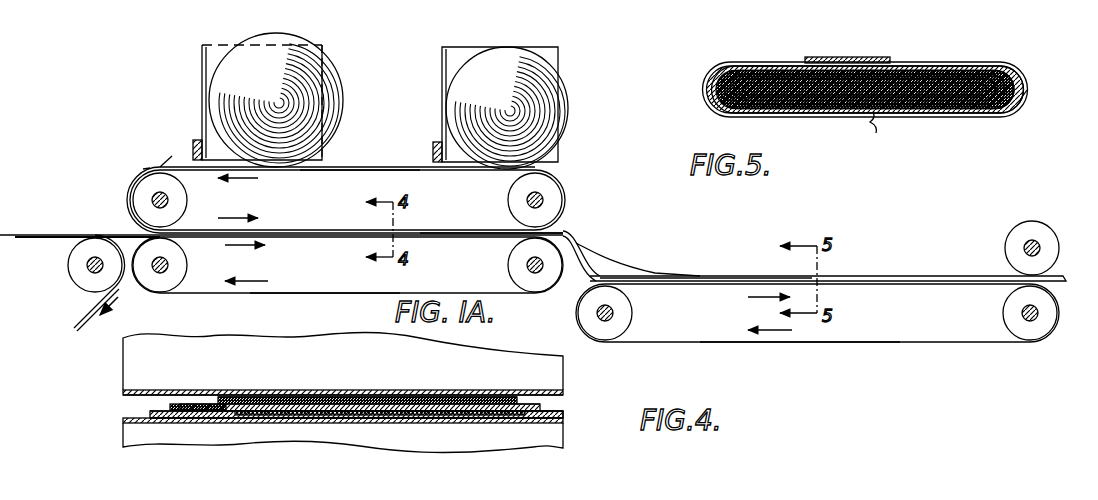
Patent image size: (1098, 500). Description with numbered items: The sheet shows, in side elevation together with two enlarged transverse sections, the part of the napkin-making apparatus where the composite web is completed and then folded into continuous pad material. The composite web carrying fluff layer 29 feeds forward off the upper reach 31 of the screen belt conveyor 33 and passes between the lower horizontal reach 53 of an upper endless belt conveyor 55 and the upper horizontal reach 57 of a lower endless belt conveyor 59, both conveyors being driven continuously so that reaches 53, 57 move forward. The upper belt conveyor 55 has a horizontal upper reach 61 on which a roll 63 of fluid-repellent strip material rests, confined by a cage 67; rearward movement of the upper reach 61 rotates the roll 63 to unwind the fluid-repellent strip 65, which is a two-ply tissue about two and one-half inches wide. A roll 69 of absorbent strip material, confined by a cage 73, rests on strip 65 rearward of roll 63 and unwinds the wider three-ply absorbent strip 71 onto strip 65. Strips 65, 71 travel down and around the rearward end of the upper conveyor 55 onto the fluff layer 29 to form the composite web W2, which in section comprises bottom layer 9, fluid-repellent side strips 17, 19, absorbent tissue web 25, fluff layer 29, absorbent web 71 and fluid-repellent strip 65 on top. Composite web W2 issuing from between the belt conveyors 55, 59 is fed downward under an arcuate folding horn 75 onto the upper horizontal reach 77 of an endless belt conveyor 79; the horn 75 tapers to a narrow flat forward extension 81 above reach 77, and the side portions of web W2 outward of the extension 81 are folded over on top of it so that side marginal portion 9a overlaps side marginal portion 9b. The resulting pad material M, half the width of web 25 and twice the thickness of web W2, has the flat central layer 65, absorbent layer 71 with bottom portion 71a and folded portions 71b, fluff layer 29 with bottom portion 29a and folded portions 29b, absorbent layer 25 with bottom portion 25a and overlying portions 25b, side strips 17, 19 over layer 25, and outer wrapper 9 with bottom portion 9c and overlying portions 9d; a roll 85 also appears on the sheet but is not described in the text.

In FIG. 1A, the cage 73 is at (218, 45).
In FIG. 1A, the roll of absorbent strip material 69 is at (326, 88).
In FIG. 1A, the cage 67 is at (462, 47).
In FIG. 1A, the roll of fluid-repellent strip material 63 is at (552, 106).
In FIG. 1A, the upper endless belt conveyor 55 is at (140, 167).
In FIG. 1A, the absorbent strip 71 is at (166, 167).
In FIG. 4, the absorbent strip 71 is at (432, 400).
In FIG. 5, the absorbent strip 71 is at (960, 116).
In FIG. 1A, the fluid-repellent strip 65 is at (128, 186).
In FIG. 4, the fluid-repellent strip 65 is at (345, 395).
In FIG. 5, the fluid-repellent strip 65 is at (815, 112).
In FIG. 1A, the upper reach 61 is at (353, 170).
In FIG. 1A, the lower horizontal reach 53 is at (299, 230).
In FIG. 4, the lower horizontal reach 53 is at (140, 390).
In FIG. 1A, the upper horizontal reach 57 is at (317, 237).
In FIG. 4, the upper horizontal reach 57 is at (560, 436).
In FIG. 1A, the lower endless belt conveyor 59 is at (306, 295).
In FIG. 1A, the upper reach 31 is at (39, 238).
In FIG. 1A, the screen belt conveyor 33 is at (88, 329).
In FIG. 1A, the composite web W2 is at (462, 231).
In FIG. 4, the composite web W2 is at (541, 410).
In FIG. 1A, the arcuate folding horn 75 is at (582, 252).
In FIG. 1A, the flat forward extension 81 is at (718, 276).
In FIG. 1A, the pad material M is at (942, 272).
In FIG. 5, the pad material M is at (720, 66).
In FIG. 1A, the upper horizontal reach 77 is at (892, 286).
In FIG. 1A, the endless belt conveyor 79 is at (790, 344).
In FIG. 1A, the press roll 85 is at (1011, 238).
In FIG. 4, the fluff layer 29 is at (205, 398).
In FIG. 5, the fluff layer 29 is at (766, 113).
In FIG. 4, the bottom layer 9 is at (214, 418).
In FIG. 5, the bottom layer 9 is at (708, 80).
In FIG. 4, the side marginal portion 9a is at (563, 420).
In FIG. 5, the side marginal portion 9a is at (818, 57).
In FIG. 4, the side marginal portion 9b is at (176, 408).
In FIG. 5, the side marginal portion 9b is at (856, 68).
In FIG. 5, the bottom portion 9c is at (869, 133).
In FIG. 5, the overlying portions 9d is at (768, 66).
In FIG. 4, the fluid-repellent side strip 17 is at (271, 411).
In FIG. 5, the fluid-repellent side strip 17 is at (710, 98).
In FIG. 4, the absorbent tissue web 25 is at (331, 415).
In FIG. 5, the absorbent tissue web 25 is at (742, 116).
In FIG. 5, the bottom portion 25a is at (915, 108).
In FIG. 5, the overlying portions 25b is at (836, 72).
In FIG. 4, the fluid-repellent side strip 19 is at (428, 420).
In FIG. 5, the fluid-repellent side strip 19 is at (1023, 104).
In FIG. 5, the flat bottom portion 29a is at (856, 110).
In FIG. 5, the folded portions 29b is at (786, 72).
In FIG. 5, the bottom portion 71a is at (888, 102).
In FIG. 5, the folded portions 71b is at (757, 66).